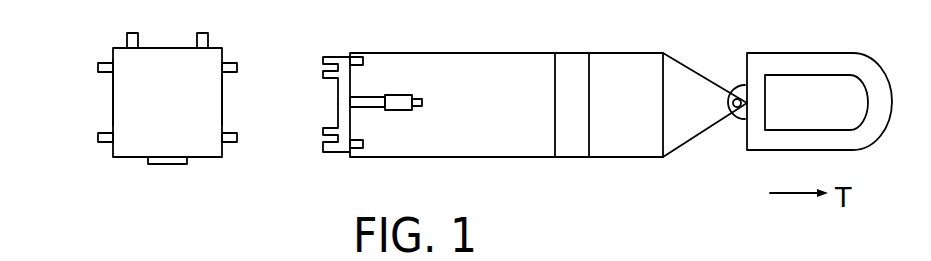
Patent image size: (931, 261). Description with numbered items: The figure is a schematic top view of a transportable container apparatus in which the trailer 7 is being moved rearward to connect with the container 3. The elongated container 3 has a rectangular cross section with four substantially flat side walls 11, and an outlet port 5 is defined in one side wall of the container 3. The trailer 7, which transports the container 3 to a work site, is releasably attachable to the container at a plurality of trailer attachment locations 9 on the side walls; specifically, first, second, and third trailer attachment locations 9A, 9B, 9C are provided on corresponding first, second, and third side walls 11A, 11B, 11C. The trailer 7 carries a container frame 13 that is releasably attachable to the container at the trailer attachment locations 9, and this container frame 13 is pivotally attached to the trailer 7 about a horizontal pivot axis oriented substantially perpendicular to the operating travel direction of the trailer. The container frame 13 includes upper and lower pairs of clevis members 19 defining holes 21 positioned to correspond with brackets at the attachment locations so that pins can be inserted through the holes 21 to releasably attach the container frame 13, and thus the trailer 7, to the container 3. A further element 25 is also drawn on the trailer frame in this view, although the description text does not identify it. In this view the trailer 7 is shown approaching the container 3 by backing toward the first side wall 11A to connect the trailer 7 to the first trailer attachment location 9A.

The container 3 is at (113, 157).
The outlet port 5 is at (167, 164).
The trailer 7 is at (522, 158).
The trailer attachment locations 9 is at (269, 165).
The first trailer attachment location 9A is at (237, 139).
The second trailer attachment location 9B is at (132, 33).
The third trailer attachment location 9C is at (98, 140).
The side walls 11 is at (228, 24).
The first side wall 11A is at (222, 104).
The second side wall 11B is at (202, 40).
The third side wall 11C is at (113, 93).
The container frame 13 is at (352, 92).
The clevis members 19 is at (332, 152).
The holes 21 is at (332, 57).
The sensor 25 is at (400, 111).